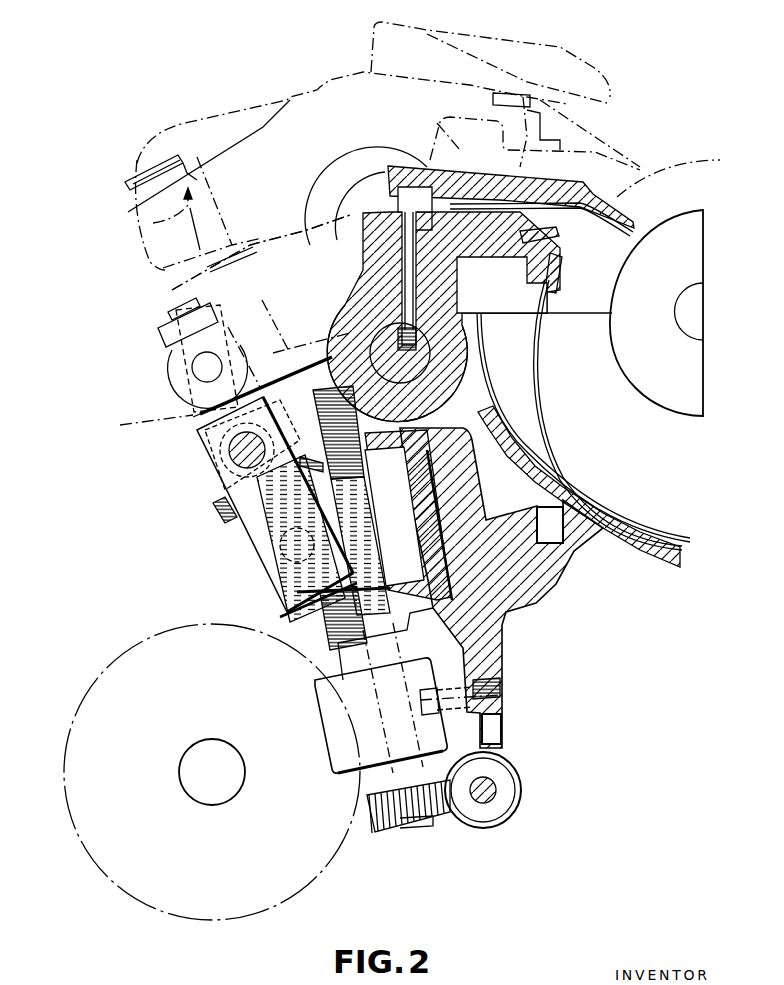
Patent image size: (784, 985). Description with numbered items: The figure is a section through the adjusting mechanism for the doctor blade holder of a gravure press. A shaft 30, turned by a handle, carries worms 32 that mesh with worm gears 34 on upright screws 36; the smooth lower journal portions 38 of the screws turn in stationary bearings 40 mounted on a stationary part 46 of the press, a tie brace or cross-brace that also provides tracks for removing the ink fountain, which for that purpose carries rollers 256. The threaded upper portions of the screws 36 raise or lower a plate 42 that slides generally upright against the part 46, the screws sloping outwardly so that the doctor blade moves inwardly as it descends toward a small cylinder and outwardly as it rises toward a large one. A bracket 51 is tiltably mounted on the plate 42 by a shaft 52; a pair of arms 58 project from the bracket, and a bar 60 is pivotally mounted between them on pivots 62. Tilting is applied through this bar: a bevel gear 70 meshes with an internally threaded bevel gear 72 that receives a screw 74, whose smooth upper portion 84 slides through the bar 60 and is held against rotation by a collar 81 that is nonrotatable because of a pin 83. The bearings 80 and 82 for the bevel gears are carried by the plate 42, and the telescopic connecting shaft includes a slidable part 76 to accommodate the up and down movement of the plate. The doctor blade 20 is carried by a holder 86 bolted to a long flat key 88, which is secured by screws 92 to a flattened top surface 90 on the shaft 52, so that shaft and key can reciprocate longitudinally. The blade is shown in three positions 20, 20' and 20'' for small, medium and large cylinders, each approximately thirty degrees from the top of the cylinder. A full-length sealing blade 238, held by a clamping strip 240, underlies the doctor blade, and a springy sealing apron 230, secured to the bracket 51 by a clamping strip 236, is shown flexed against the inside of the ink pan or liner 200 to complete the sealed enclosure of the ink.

The doctor blade 20 is at (590, 304).
The doctor blade intermediate position 20' is at (670, 150).
The doctor blade position for large cylinder 20'' is at (639, 83).
The doctor blade holder 86 is at (567, 182).
The sealing blade 238 is at (573, 240).
The clamping strip 240 is at (557, 240).
The clamping strip 236 is at (556, 283).
The long flat key 88 is at (430, 265).
The bracket 51 is at (453, 287).
The screws 92 is at (407, 307).
The flattened top surface 90 is at (447, 337).
The shaft 52 is at (423, 352).
The ink pan 200 is at (487, 380).
The sealing apron 230 is at (545, 437).
The arms 58 is at (263, 282).
The pin 83 is at (172, 314).
The collar 81 is at (160, 338).
The bar 60 is at (167, 364).
The pivots 62 is at (215, 365).
The smooth upper portion of screw 84 is at (196, 406).
The bearing 80 is at (200, 447).
The bevel gear 70 is at (207, 480).
The bearing 82 is at (213, 500).
The bevel gear 72 is at (213, 523).
The screws 36 is at (317, 398).
The slidable part 76 is at (303, 415).
The bearings 40 is at (380, 560).
The plate 42 is at (427, 567).
The stationary part 46 is at (477, 507).
The rollers 256 is at (537, 513).
The screw 74 is at (318, 622).
The smooth lower journal portions 38 is at (390, 702).
The worms 32 is at (520, 773).
The shaft 30 is at (460, 793).
The worm gears 34 is at (377, 827).